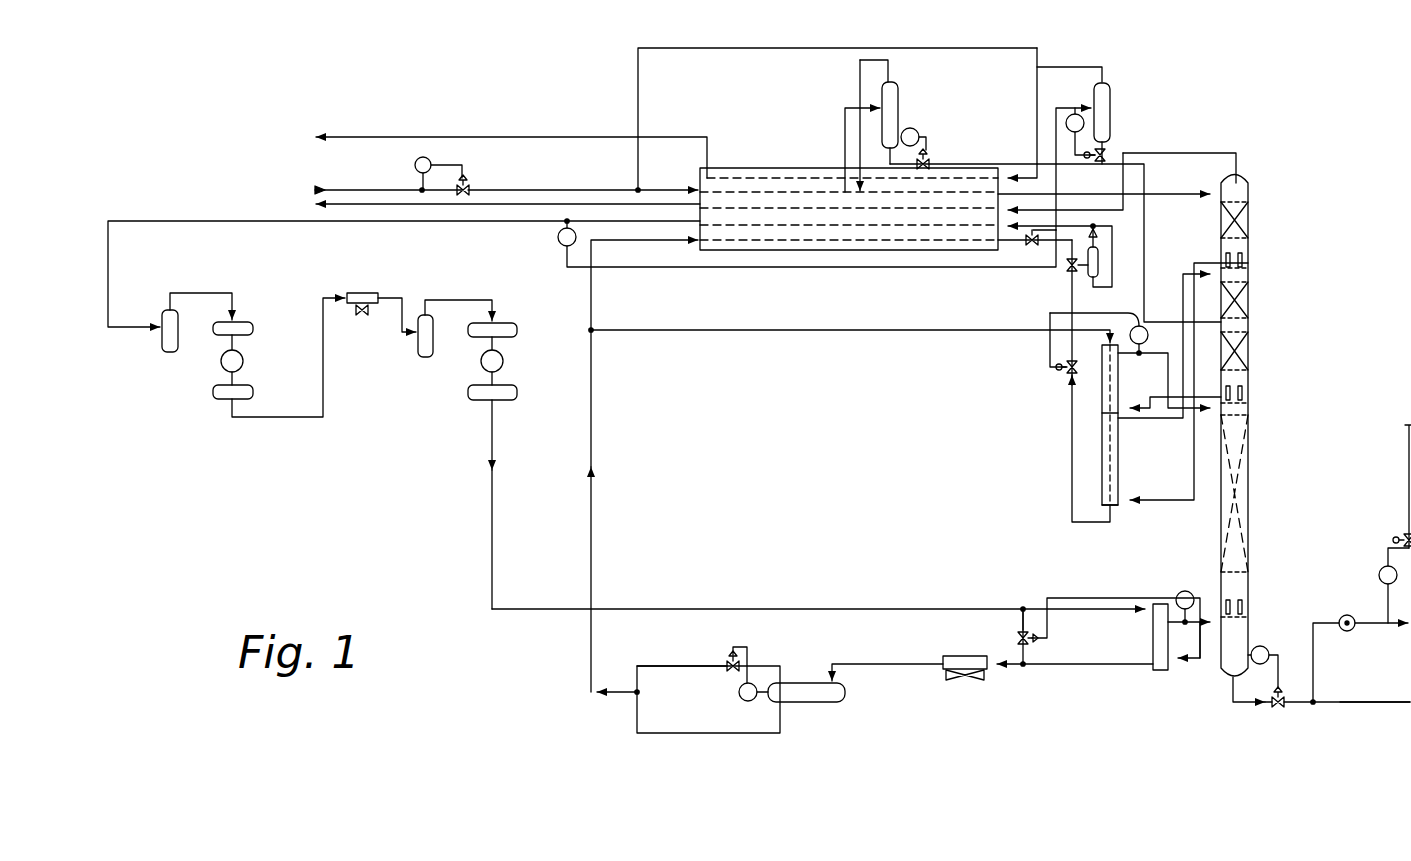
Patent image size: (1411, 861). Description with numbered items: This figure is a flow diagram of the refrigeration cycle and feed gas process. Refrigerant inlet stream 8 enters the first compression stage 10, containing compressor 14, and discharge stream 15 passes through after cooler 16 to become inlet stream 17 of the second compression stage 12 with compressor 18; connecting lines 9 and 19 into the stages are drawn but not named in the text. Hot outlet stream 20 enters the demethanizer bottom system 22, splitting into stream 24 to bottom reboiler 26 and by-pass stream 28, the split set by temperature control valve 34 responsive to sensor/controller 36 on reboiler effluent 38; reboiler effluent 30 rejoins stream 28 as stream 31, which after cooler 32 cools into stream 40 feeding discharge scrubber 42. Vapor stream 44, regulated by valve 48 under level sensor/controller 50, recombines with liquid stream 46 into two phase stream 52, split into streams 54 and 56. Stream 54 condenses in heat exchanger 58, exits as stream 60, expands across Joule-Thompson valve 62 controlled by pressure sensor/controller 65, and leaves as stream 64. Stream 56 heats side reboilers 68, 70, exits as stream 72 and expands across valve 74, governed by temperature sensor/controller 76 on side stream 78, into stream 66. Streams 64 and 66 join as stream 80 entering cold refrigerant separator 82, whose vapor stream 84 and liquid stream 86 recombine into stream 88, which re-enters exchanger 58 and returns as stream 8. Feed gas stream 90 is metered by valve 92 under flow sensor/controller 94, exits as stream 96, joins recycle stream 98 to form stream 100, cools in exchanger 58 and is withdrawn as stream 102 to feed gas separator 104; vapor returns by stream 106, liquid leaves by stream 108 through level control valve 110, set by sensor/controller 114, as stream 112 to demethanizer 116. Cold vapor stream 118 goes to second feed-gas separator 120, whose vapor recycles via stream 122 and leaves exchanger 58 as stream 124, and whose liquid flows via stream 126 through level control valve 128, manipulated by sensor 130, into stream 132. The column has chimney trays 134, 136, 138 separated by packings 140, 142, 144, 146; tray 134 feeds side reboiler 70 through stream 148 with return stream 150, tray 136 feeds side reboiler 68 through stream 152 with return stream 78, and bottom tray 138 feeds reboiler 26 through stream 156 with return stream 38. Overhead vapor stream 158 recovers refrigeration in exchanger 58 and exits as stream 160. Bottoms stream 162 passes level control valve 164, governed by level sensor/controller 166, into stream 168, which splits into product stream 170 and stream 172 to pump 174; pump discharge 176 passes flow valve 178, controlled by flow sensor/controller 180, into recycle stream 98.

The inlet stream 8 is at (124, 312).
The line from inlet separator to first compressor 9 is at (222, 293).
The first stage of compression 10 is at (255, 342).
The second stage of compression 12 is at (512, 353).
The compressor 14 is at (221, 361).
The discharge stream 15 is at (280, 421).
The first stage refrigerant compressor after cooler 16 is at (352, 290).
The inlet stream 17 is at (400, 298).
The second stage compressor 18 is at (481, 361).
The line to second compressor 19 is at (472, 300).
The outlet stream 20 is at (496, 434).
The demethanizer bottom system 22 is at (1028, 600).
The first stream 24 is at (1048, 600).
The reboiler 26 is at (1150, 634).
The by-pass stream 28 is at (1020, 605).
The effluent 30 is at (1024, 670).
The stream 31 is at (1000, 656).
The second stage refrigerant compressor after cooler 32 is at (950, 655).
The temperature control valve 34 is at (1015, 635).
The temperature sensor/controller 36 is at (1185, 591).
The demethanizer bottoms reboiler effluent 38 is at (1150, 622).
The refrigerant stream 40 is at (860, 662).
The second stage compressor discharge scrubber 42 is at (808, 705).
The vapor stream 44 is at (665, 665).
The liquid stream 46 is at (660, 735).
The valve 48 is at (726, 660).
The level sensor/controller 50 is at (738, 694).
The two phase refrigerant stream 52 is at (588, 652).
The stream 54 is at (596, 300).
The split stream 56 is at (682, 334).
The heat exchanger 58 is at (848, 256).
The stream 60 is at (1000, 268).
The Joule-Thompson control valve 62 is at (1012, 265).
The outlet stream 64 is at (1030, 272).
The pressure sensor/controller 65 is at (557, 240).
The stream 66 is at (1062, 302).
The side reboiler 68 is at (1100, 395).
The side reboiler 70 is at (1100, 427).
The stream 72 is at (1100, 455).
The Joule-Thompson control valve 74 is at (1062, 372).
The temperature sensor/controller 76 is at (1149, 338).
The side stream 78 is at (1130, 360).
The stream 80 is at (1066, 283).
The cold refrigerant separator 82 is at (1100, 258).
The vapor stream 84 is at (1105, 230).
The liquid stream 86 is at (1112, 245).
The two phase refrigerant stream 88 is at (1050, 210).
The feed gas stream 90 is at (348, 188).
The valve 92 is at (470, 184).
The flow sensor/controller 94 is at (420, 186).
The stream 96 is at (596, 188).
The recycle stream 98 is at (636, 78).
The feed stream 100 is at (657, 188).
The stream 102 is at (843, 117).
The feed gas separator 104 is at (898, 88).
The vapor stream 106 is at (858, 78).
The liquid stream 108 is at (885, 158).
The level control valve 110 is at (930, 155).
The stream 112 is at (972, 164).
The level control sensor/controller 114 is at (918, 130).
The demethanizer 116 is at (1252, 246).
The stream 118 is at (1050, 181).
The second feed-gas separator 120 is at (1112, 92).
The vapor recycle stream 122 is at (1035, 80).
The vapor outlet stream 124 is at (517, 136).
The liquid stream 126 is at (1110, 150).
The level control valve 128 is at (1130, 162).
The level control instrument sensor 130 is at (1070, 115).
The stream 132 is at (1180, 192).
The chimney tray 134 is at (1250, 262).
The chimney tray 136 is at (1250, 405).
The chimney tray 138 is at (1250, 598).
The packing 140 is at (1250, 224).
The packing 142 is at (1250, 305).
The packing 144 is at (1250, 355).
The packing 146 is at (1250, 500).
The stream 148 is at (1198, 255).
The stream 150 is at (1182, 290).
The stream 152 is at (1128, 420).
The inlet process stream 156 is at (1178, 675).
The stream 158 is at (1240, 158).
The stream 160 is at (533, 202).
The outlet stream 162 is at (1240, 705).
The level control valve 164 is at (1278, 716).
The level sensor/controller 166 is at (1262, 647).
The outlet stream 168 is at (1313, 708).
The stream 170 is at (1372, 705).
The stream 172 is at (1318, 622).
The pump 174 is at (1346, 615).
The stream 176 is at (1386, 605).
The flow valve 178 is at (1405, 532).
The flow sensor/controller 180 is at (1385, 562).